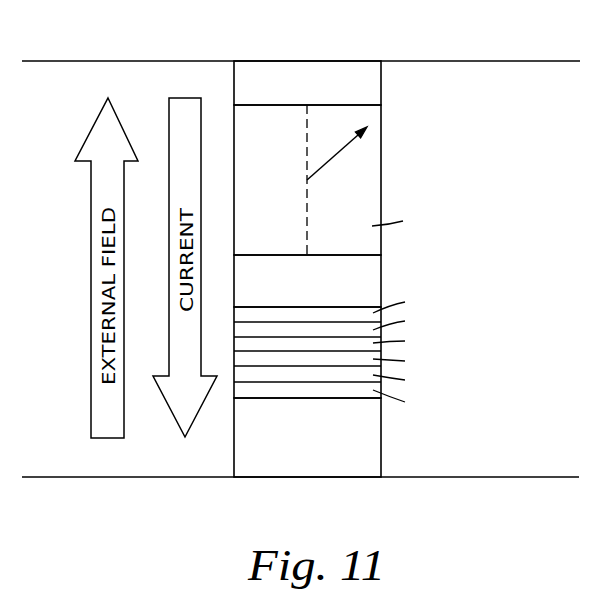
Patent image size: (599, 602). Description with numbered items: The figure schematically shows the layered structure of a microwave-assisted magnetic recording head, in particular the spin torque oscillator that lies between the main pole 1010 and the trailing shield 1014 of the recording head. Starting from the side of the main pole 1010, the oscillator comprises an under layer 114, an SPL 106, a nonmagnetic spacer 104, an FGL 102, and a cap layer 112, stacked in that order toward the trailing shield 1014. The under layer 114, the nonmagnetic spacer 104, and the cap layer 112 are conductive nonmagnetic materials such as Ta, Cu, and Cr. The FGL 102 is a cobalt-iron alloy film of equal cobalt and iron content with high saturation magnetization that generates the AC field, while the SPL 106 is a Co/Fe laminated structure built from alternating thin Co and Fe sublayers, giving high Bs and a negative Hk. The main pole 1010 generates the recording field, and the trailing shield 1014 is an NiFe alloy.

The trailing shield 1014 is at (332, 43).
The main pole 1010 is at (332, 514).
The cap layer 112 is at (320, 91).
The FGL 102 is at (293, 190).
The nonmagnetic spacer 104 is at (320, 285).
The SPL 106 is at (450, 290).
The under layer 114 is at (320, 450).